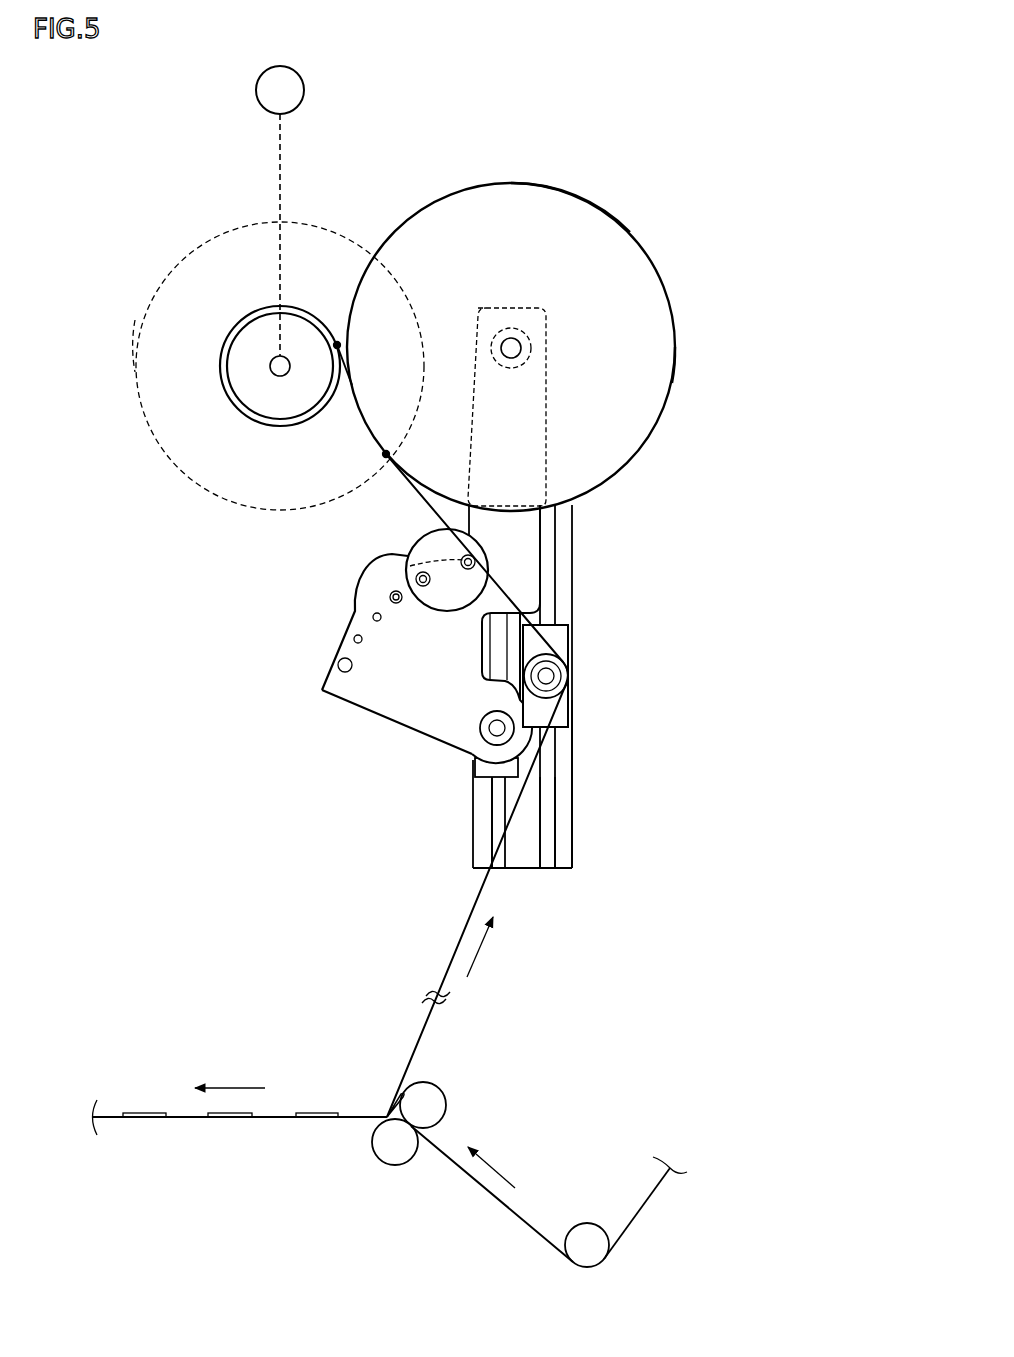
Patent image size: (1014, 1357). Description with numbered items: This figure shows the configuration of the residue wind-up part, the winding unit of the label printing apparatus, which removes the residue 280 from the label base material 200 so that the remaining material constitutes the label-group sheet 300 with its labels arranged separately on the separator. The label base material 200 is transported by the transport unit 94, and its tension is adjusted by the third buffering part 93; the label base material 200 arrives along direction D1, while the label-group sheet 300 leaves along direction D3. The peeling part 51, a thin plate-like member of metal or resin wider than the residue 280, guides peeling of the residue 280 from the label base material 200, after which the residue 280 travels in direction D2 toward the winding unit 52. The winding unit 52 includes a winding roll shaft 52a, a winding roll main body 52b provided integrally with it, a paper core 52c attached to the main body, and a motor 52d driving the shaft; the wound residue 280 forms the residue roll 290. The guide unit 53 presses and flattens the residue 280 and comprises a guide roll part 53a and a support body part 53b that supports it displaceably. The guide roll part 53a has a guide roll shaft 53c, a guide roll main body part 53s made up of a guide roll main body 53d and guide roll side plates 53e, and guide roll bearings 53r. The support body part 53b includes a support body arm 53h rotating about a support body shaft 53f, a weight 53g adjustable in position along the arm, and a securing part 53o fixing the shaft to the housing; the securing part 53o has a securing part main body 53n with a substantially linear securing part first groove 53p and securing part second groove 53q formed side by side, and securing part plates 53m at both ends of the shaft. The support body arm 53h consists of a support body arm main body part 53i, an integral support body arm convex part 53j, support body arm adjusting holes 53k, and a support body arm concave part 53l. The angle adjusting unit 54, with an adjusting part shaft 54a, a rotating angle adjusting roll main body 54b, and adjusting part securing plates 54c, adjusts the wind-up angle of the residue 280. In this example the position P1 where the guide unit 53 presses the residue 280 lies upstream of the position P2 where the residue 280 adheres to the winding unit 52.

The winding unit 52 is at (253, 342).
The winding roll shaft 52a is at (279, 377).
The winding roll main body 52b is at (253, 387).
The paper core 52c is at (220, 383).
The motor 52d is at (256, 90).
The residue roll 290 is at (137, 345).
The guide unit 53 is at (444, 666).
The guide roll part 53a is at (672, 288).
The guide roll main body part 53s is at (630, 232).
The guide roll bearings 53r is at (522, 335).
The guide roll shaft 53c is at (515, 345).
The guide roll main body 53d is at (673, 383).
The guide roll side plates 53e is at (615, 418).
The support body part 53b is at (582, 533).
The support body arm 53h is at (523, 567).
The support body arm main body part 53i is at (505, 668).
The support body arm convex part 53j is at (407, 708).
The support body shaft 53f is at (497, 728).
The support body arm adjusting holes 53k is at (353, 620).
The weight 53g is at (354, 641).
The support body arm concave part 53l is at (543, 673).
The securing part plates 53m is at (513, 767).
The securing part main body 53n is at (525, 862).
The securing part 53o is at (565, 848).
The securing part first groove 53p is at (497, 865).
The securing part second groove 53q is at (548, 862).
The angle adjusting unit 54 is at (657, 660).
The adjusting part shaft 54a is at (548, 680).
The angle adjusting roll main body 54b is at (547, 702).
The adjusting part securing plates 54c is at (560, 637).
The residue 280 is at (465, 905).
The peeling part 51 is at (405, 1080).
The transport unit 94 is at (442, 1086).
The third buffering part 93 is at (590, 1223).
The label-group sheet 300 is at (113, 1120).
The label base material 200 is at (495, 1203).
The position where the guide unit presses the residue P1 is at (372, 457).
The position where the residue is adhered to the winding unit P2 is at (354, 346).
The feed direction D1 is at (496, 1163).
The backing sheet direction D2 is at (492, 947).
The label conveyance direction D3 is at (230, 1076).